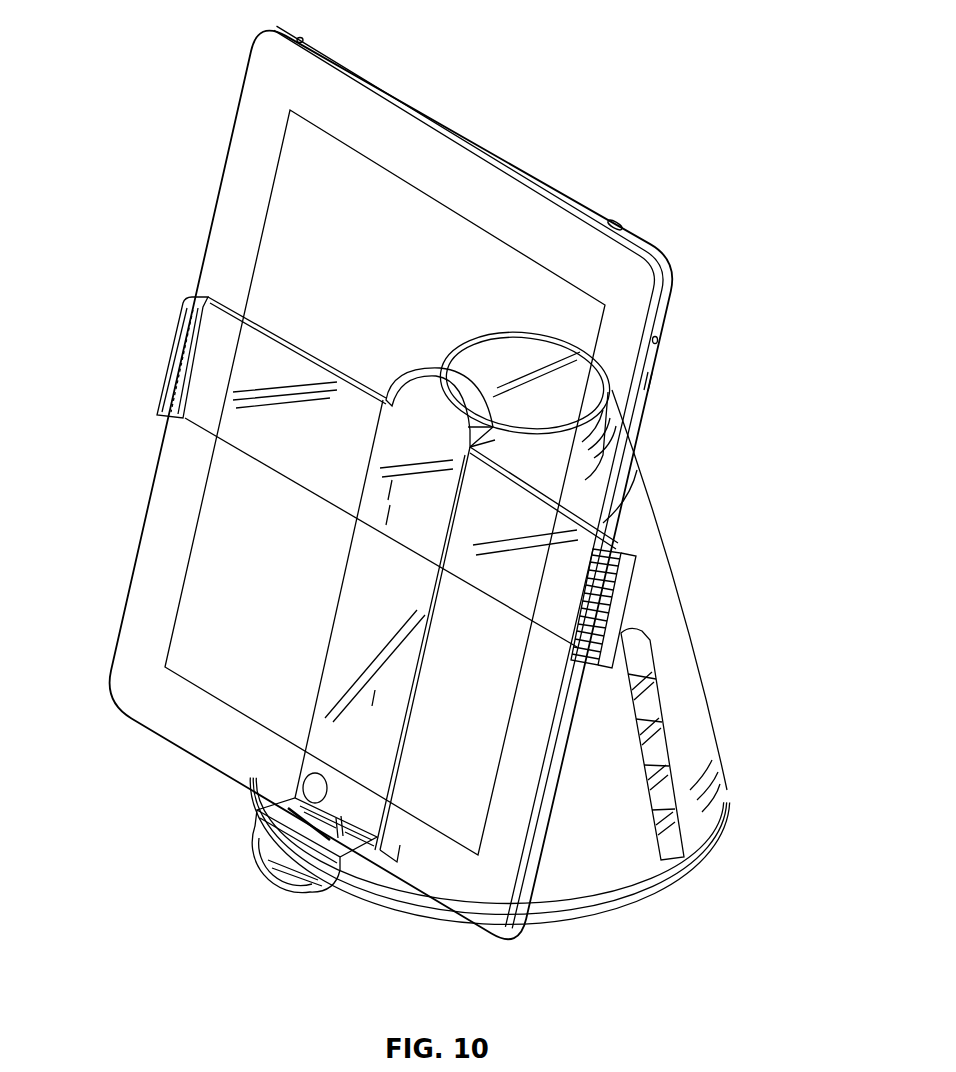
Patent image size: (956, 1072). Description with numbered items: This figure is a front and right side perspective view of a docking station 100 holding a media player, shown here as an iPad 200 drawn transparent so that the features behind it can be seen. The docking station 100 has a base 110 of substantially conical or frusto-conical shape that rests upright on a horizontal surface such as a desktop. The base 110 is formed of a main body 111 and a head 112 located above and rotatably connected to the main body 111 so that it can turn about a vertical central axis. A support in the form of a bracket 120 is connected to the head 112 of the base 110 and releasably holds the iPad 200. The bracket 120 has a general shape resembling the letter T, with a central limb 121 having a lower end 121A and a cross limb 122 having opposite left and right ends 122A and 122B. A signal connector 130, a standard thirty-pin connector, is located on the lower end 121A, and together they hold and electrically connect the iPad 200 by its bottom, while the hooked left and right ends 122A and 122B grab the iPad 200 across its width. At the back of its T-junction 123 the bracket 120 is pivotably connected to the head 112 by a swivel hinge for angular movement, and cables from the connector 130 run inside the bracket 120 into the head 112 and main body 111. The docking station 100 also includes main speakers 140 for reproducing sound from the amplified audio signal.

The docking station 100 is at (542, 48).
The iPad 200 is at (500, 190).
The base 110 is at (724, 832).
The main body 111 is at (675, 645).
The head 112 is at (612, 440).
The bracket 120 is at (268, 462).
The central limb 121 is at (352, 590).
The lower end 121A is at (306, 880).
The cross limb 122 is at (320, 365).
The left end 122A is at (190, 300).
The right end 122B is at (590, 665).
The T-junction 123 is at (414, 395).
The signal connector 130 is at (302, 812).
The main speakers 140 is at (586, 878).